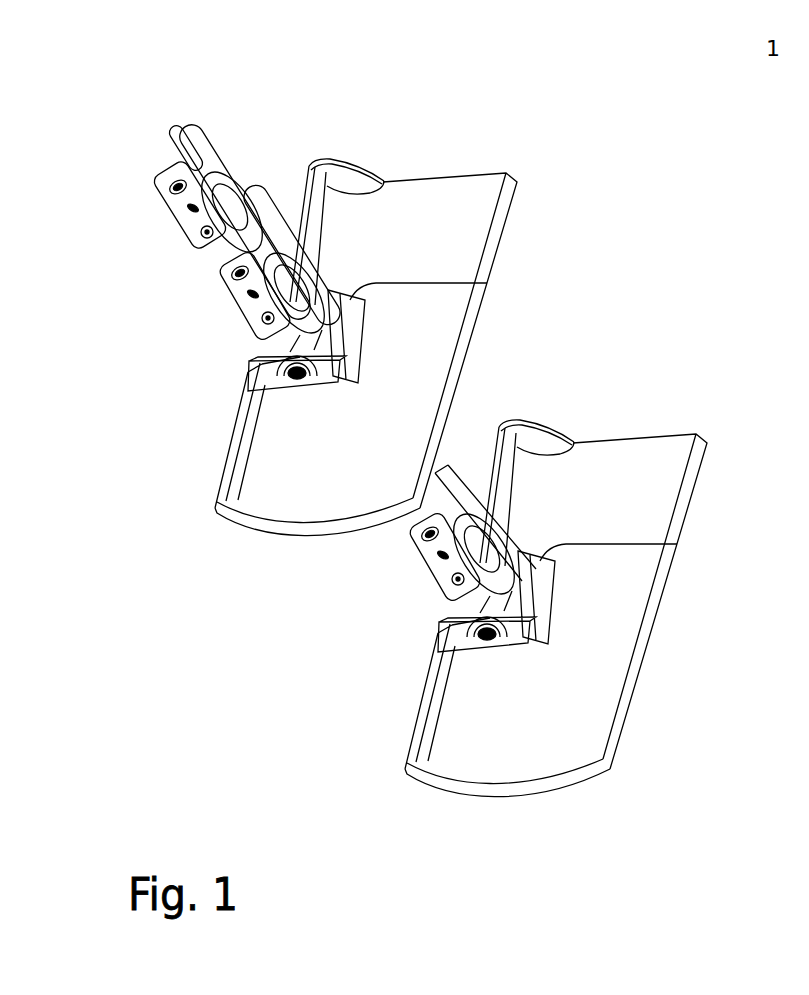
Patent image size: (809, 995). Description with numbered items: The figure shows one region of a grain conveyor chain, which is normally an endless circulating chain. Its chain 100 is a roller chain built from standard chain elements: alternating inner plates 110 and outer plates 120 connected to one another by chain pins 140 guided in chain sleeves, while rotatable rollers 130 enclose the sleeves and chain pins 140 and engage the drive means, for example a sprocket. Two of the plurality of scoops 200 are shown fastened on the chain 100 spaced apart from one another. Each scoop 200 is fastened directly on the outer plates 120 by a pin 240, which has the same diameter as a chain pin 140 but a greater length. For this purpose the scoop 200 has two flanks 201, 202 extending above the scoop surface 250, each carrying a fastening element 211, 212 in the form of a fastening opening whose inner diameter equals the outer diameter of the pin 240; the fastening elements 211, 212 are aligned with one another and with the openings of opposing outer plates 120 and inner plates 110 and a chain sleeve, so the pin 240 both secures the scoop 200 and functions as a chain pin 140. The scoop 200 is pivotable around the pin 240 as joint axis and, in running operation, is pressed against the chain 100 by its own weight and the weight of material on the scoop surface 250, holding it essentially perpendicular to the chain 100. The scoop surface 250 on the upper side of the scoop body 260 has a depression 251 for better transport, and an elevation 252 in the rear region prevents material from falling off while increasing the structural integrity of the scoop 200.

The chain 100 is at (218, 102).
The inner plates 110 is at (247, 188).
The outer plates 120 is at (163, 200).
The rollers 130 is at (257, 188).
The chain pins 140 is at (170, 120).
The scoop 200 is at (505, 140).
The flank 201 is at (347, 391).
The flank 202 is at (487, 283).
The fastening element 211 is at (253, 361).
The fastening element 212 is at (327, 300).
The pin 240 is at (250, 392).
The scoop surface 250 is at (290, 478).
The depression 251 is at (394, 351).
The elevation 252 is at (327, 162).
The scoop body 260 is at (383, 520).